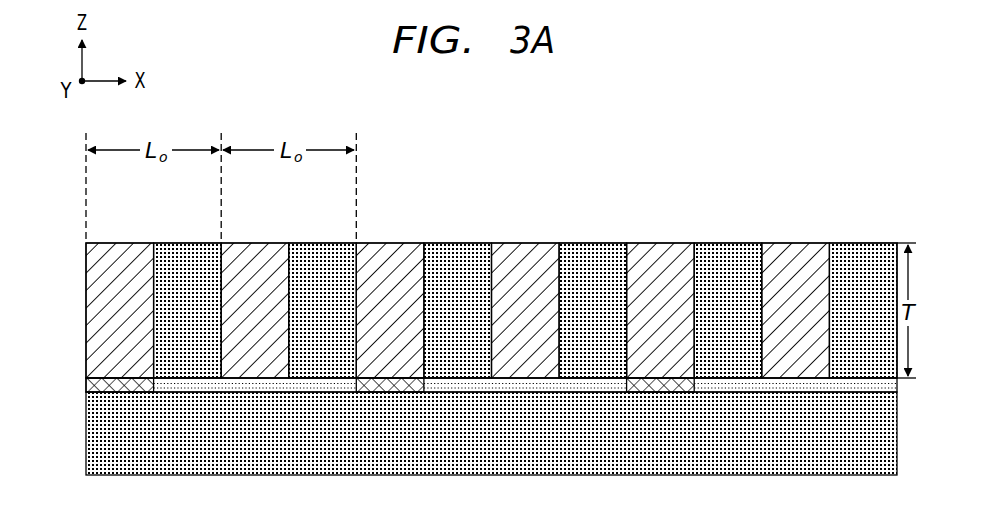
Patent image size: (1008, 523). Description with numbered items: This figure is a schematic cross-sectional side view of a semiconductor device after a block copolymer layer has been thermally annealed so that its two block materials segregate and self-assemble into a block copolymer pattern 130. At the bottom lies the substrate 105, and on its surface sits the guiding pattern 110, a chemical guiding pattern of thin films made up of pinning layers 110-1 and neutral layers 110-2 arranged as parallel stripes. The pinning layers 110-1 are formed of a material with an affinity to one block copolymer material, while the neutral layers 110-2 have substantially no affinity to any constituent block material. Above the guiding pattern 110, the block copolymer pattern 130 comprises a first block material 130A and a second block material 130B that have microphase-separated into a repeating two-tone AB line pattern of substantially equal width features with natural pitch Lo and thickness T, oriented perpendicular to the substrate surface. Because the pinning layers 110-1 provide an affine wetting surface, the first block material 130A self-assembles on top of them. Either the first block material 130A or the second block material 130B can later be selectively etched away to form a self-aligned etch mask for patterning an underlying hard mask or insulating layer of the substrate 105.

The substrate 105 is at (86, 432).
The guiding pattern 110 is at (83, 386).
The pinning layers 110-1 is at (123, 396).
The neutral layers 110-2 is at (252, 396).
The block copolymer pattern 130 is at (83, 302).
The first block material 130A is at (123, 241).
The second block material 130B is at (190, 241).